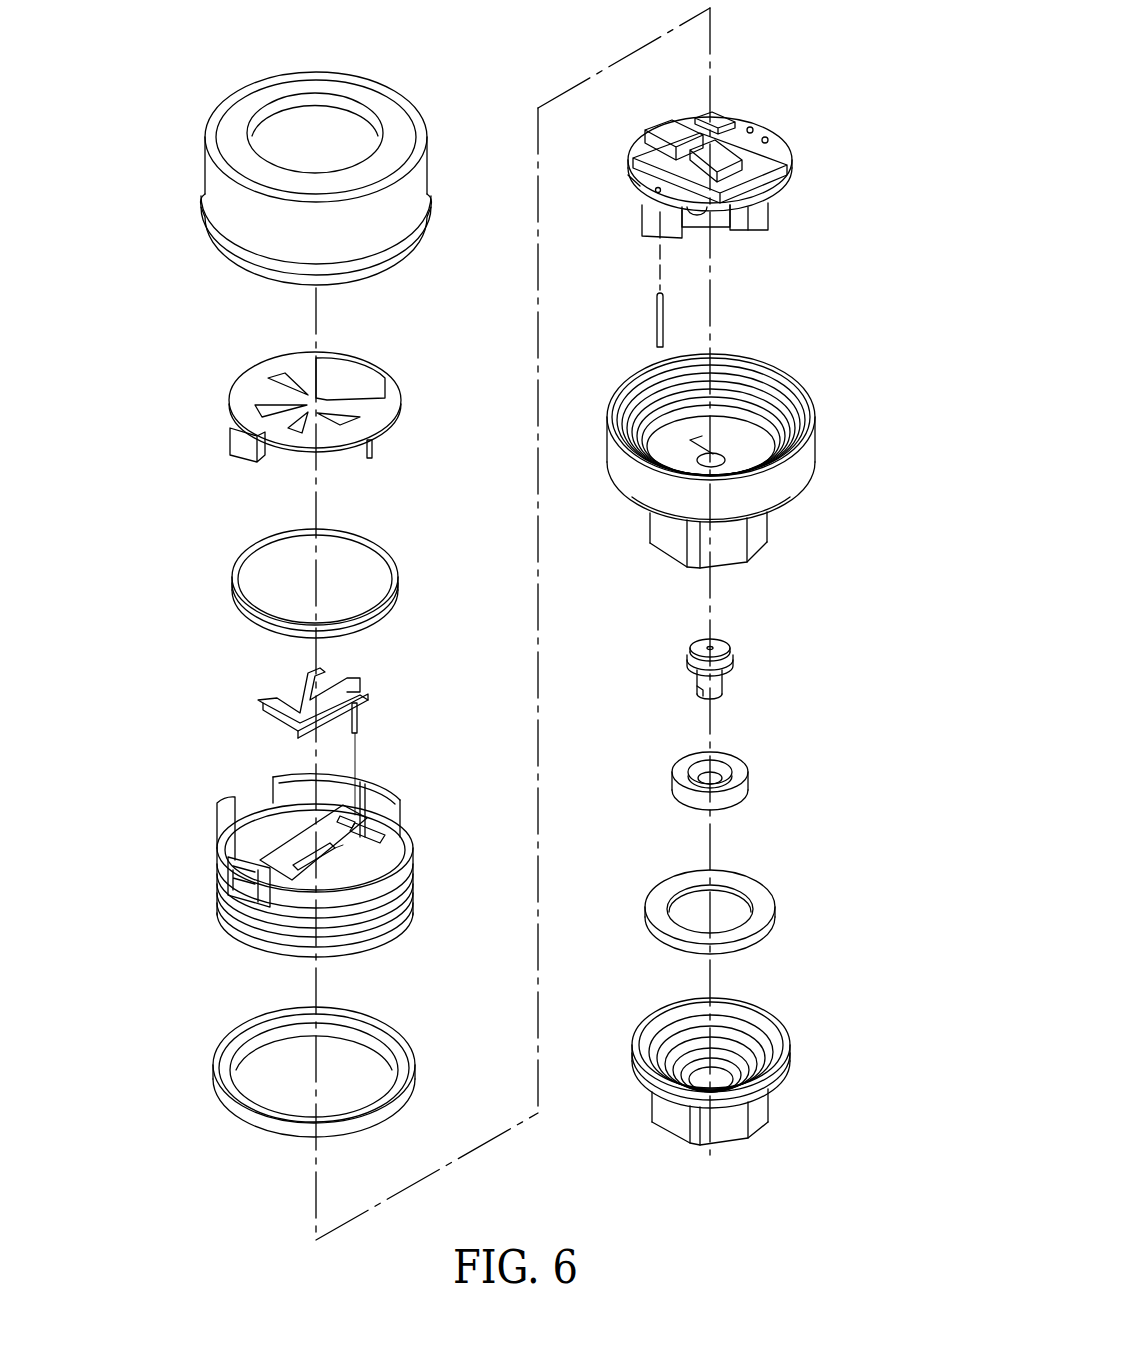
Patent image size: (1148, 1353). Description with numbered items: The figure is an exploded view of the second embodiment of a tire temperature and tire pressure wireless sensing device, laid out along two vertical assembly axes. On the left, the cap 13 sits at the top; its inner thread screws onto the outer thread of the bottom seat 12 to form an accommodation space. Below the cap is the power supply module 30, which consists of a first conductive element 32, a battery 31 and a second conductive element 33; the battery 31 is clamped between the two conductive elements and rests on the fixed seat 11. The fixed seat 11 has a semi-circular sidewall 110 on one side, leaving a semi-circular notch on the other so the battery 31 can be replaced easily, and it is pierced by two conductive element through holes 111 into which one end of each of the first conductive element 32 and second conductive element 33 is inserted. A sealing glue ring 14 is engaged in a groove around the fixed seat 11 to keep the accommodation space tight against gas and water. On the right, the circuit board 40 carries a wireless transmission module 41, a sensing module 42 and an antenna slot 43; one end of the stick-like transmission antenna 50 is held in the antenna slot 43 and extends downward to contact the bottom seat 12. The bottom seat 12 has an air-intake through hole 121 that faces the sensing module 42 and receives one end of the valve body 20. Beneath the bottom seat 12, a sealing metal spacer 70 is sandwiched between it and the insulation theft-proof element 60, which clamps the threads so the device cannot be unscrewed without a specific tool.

The cap 13 is at (247, 108).
The power supply module 30 is at (137, 380).
The first conductive element 32 is at (240, 393).
The battery 31 is at (250, 567).
The second conductive element 33 is at (258, 703).
The fixed seat 11 is at (220, 917).
The semi-circular sidewall 110 is at (223, 857).
The conductive element through holes 111 is at (358, 835).
The sealing glue ring 14 is at (220, 1068).
The circuit board 40 is at (778, 145).
The wireless transmission module 41 is at (760, 217).
The sensing module 42 is at (647, 210).
The antenna slot 43 is at (628, 178).
The transmission antenna 50 is at (660, 320).
The bottom seat 12 is at (808, 460).
The air-intake through hole 121 is at (717, 463).
The valve body 20 is at (772, 637).
The sealing metal spacer 70 is at (765, 905).
The insulation theft-proof element 60 is at (783, 1067).